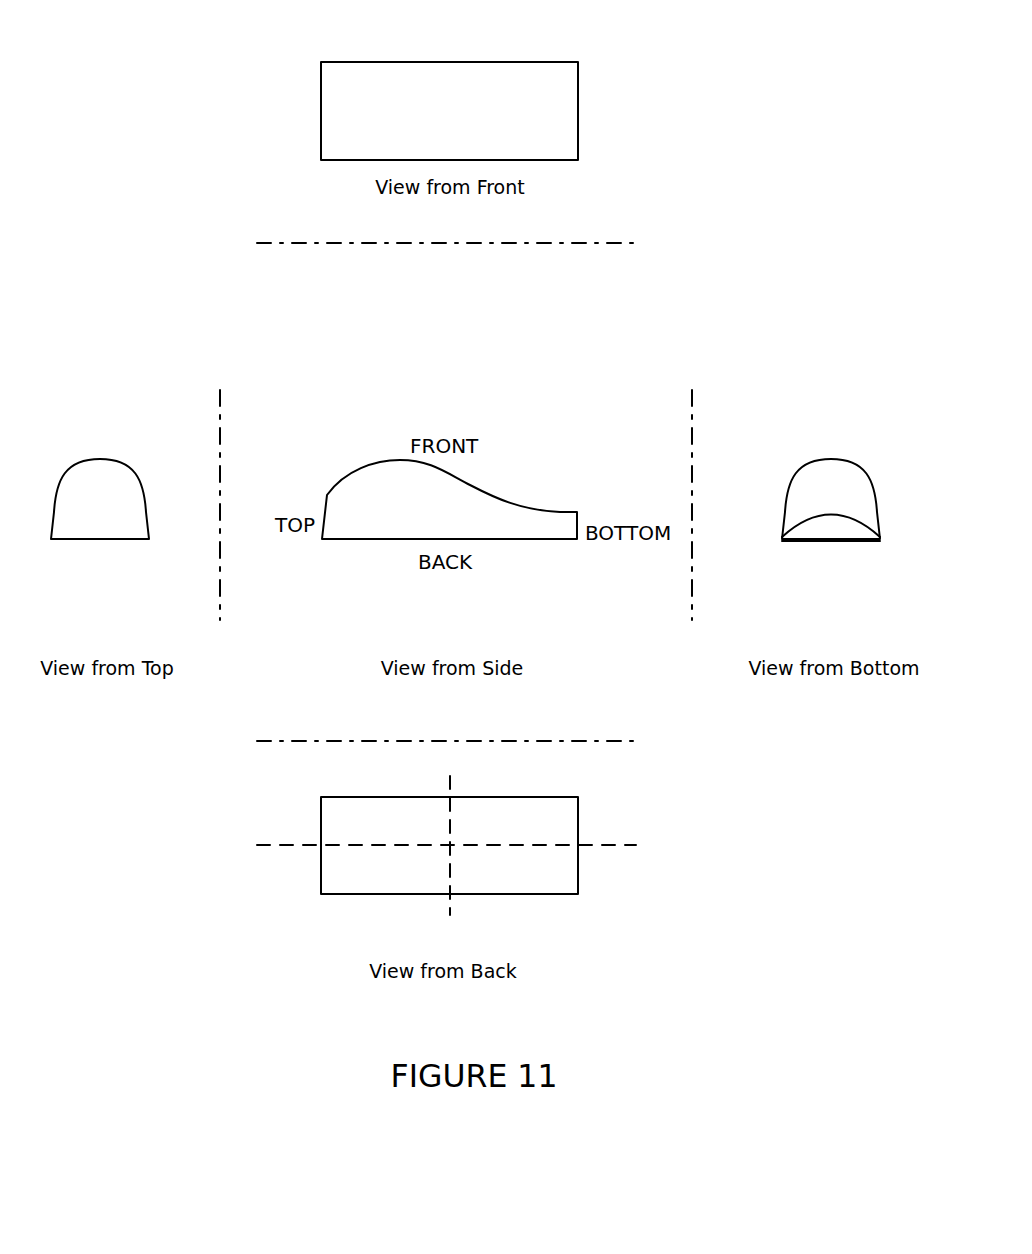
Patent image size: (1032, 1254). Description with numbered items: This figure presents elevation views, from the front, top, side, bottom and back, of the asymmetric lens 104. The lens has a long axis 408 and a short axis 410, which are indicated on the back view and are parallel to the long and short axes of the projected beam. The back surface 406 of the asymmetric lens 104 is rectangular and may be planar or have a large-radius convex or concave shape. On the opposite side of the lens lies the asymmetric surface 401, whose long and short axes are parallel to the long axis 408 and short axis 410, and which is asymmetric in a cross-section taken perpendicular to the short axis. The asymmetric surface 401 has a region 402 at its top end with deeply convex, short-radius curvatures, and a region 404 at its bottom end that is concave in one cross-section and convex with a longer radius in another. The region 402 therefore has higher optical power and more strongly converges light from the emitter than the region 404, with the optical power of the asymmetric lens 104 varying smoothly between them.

The asymmetric lens 104 is at (190, 112).
The asymmetric surface 401 is at (508, 470).
The region at a top end 402 is at (390, 107).
The region at a bottom end 404 is at (557, 107).
The back surface 406 is at (85, 540).
The long axis 408 is at (475, 845).
The short axis 410 is at (449, 861).